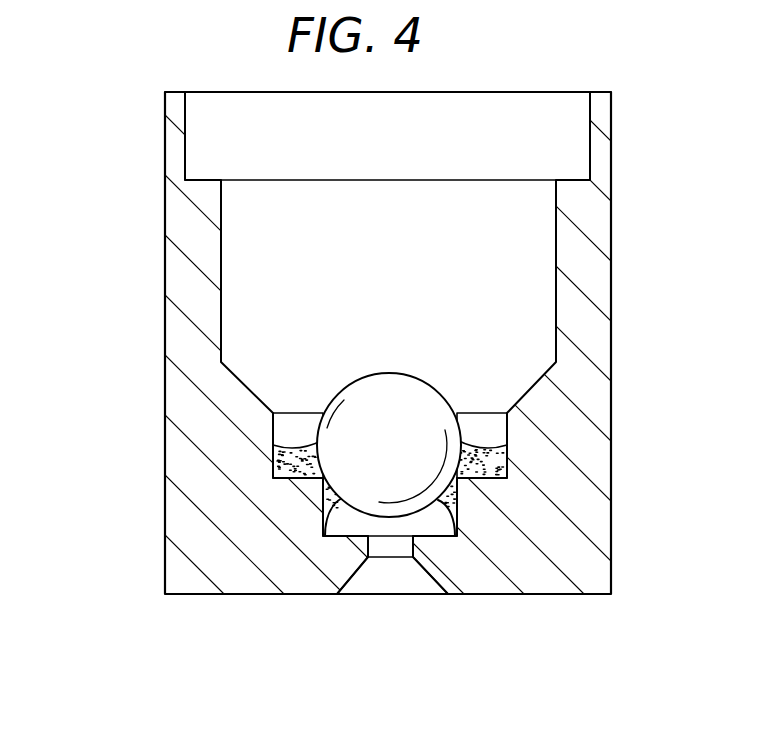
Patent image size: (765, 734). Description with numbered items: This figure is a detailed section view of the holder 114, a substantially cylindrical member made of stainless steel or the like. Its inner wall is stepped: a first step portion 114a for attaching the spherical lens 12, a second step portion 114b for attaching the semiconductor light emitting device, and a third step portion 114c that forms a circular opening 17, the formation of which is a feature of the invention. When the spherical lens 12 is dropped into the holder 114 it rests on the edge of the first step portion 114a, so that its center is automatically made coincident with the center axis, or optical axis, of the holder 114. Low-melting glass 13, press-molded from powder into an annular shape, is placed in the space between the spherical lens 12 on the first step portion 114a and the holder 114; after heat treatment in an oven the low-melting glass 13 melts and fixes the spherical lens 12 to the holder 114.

The holder 114 is at (163, 280).
The first step portion 114a is at (312, 480).
The second step portion 114b is at (573, 176).
The third step portion 114c is at (436, 526).
The spherical lens 12 is at (397, 390).
The low-melting glass 13 is at (453, 498).
The circular opening 17 is at (392, 545).